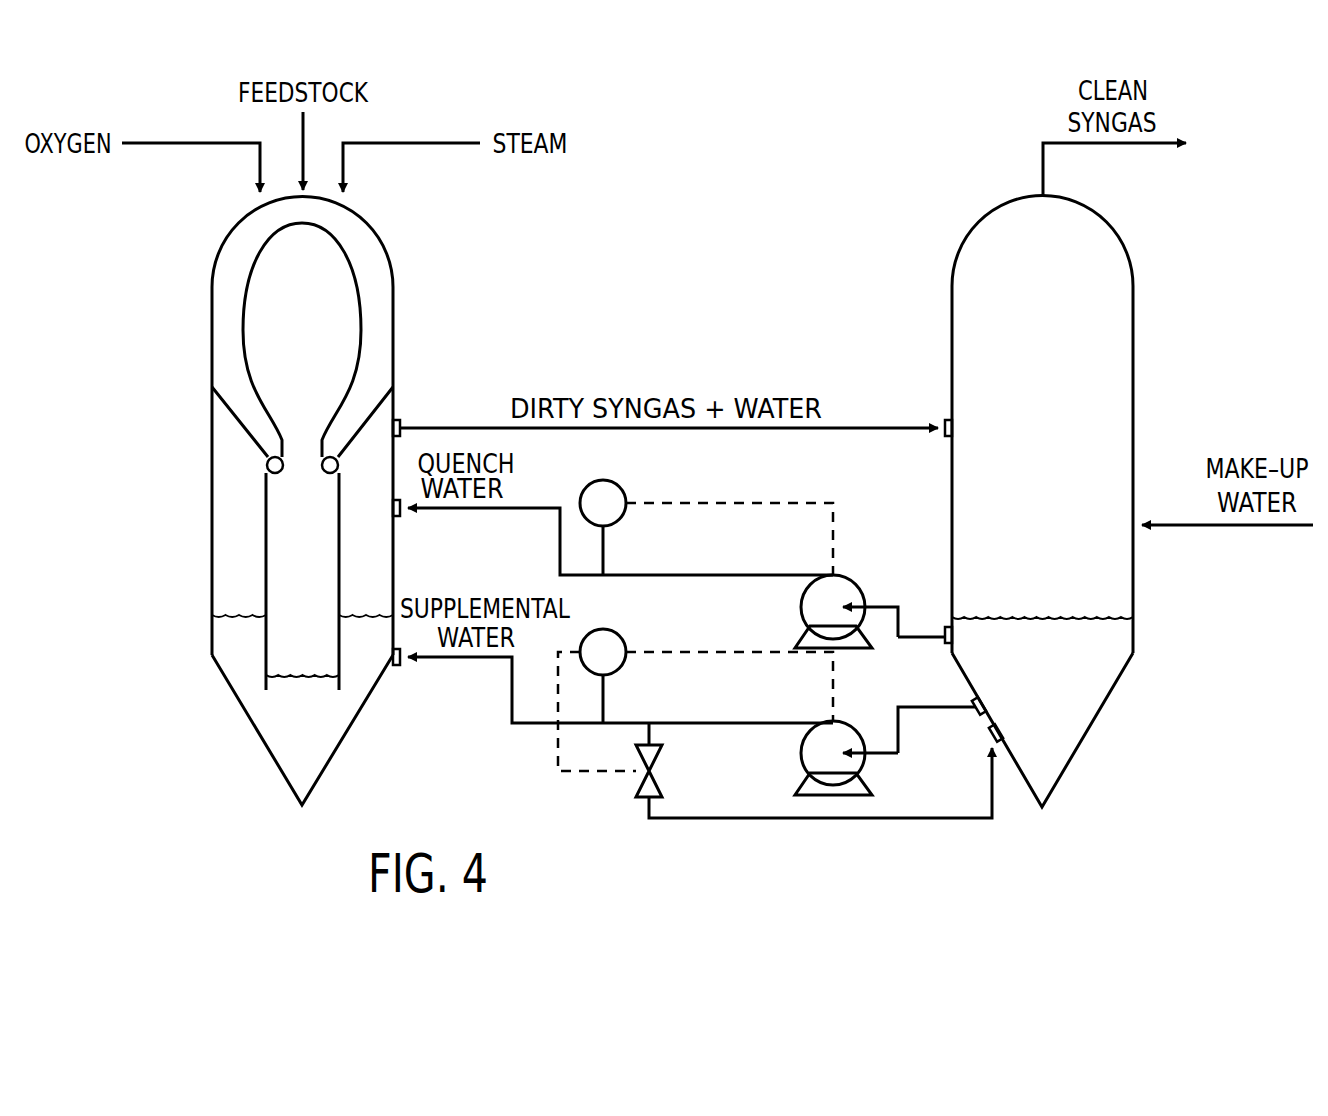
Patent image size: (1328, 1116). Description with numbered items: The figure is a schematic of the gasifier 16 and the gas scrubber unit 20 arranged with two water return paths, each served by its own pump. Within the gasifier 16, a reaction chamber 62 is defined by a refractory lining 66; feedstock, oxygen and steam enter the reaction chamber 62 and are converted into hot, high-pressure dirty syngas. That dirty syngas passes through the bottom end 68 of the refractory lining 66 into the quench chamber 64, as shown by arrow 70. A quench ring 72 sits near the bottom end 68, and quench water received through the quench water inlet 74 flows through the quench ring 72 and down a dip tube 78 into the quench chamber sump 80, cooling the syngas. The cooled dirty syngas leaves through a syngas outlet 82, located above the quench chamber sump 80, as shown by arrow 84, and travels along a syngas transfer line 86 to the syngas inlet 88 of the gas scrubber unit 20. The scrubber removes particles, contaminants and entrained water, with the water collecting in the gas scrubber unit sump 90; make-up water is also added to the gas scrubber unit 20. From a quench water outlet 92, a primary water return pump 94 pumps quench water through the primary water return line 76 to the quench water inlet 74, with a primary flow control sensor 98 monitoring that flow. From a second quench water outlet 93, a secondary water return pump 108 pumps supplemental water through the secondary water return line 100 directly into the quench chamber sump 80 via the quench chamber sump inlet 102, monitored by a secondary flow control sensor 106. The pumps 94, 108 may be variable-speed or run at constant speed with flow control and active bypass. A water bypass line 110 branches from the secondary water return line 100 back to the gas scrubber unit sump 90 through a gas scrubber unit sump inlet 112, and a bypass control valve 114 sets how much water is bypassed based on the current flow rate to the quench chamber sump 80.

The gasifier 16 is at (198, 757).
The gas scrubber unit 20 is at (1167, 741).
The reaction chamber 62 is at (184, 278).
The quench chamber 64 is at (188, 606).
The refractory lining 66 is at (383, 270).
The bottom end of the refractory lining 68 is at (255, 437).
The arrow 70 is at (302, 435).
The quench ring 72 is at (267, 469).
The quench water inlet 74 is at (401, 519).
The primary water return line 76 is at (723, 578).
The dip tube 78 is at (340, 535).
The quench chamber sump 80 is at (337, 733).
The syngas outlet 82 is at (401, 421).
The arrow 84 is at (381, 446).
The syngas transfer line 86 is at (666, 431).
The syngas inlet 88 is at (947, 419).
The gas scrubber unit sump 90 is at (1117, 641).
The quench water outlet 92 is at (945, 648).
The second quench water outlet 93 is at (985, 702).
The primary water return pump 94 is at (857, 584).
The primary flow control sensor 98 is at (590, 486).
The secondary water return line 100 is at (510, 692).
The quench chamber sump inlet 102 is at (403, 668).
The secondary flow control sensor 106 is at (622, 637).
The secondary water return pump 108 is at (857, 732).
The water bypass line 110 is at (818, 822).
The gas scrubber unit sump inlet 112 is at (989, 735).
The bypass control valve 114 is at (658, 768).